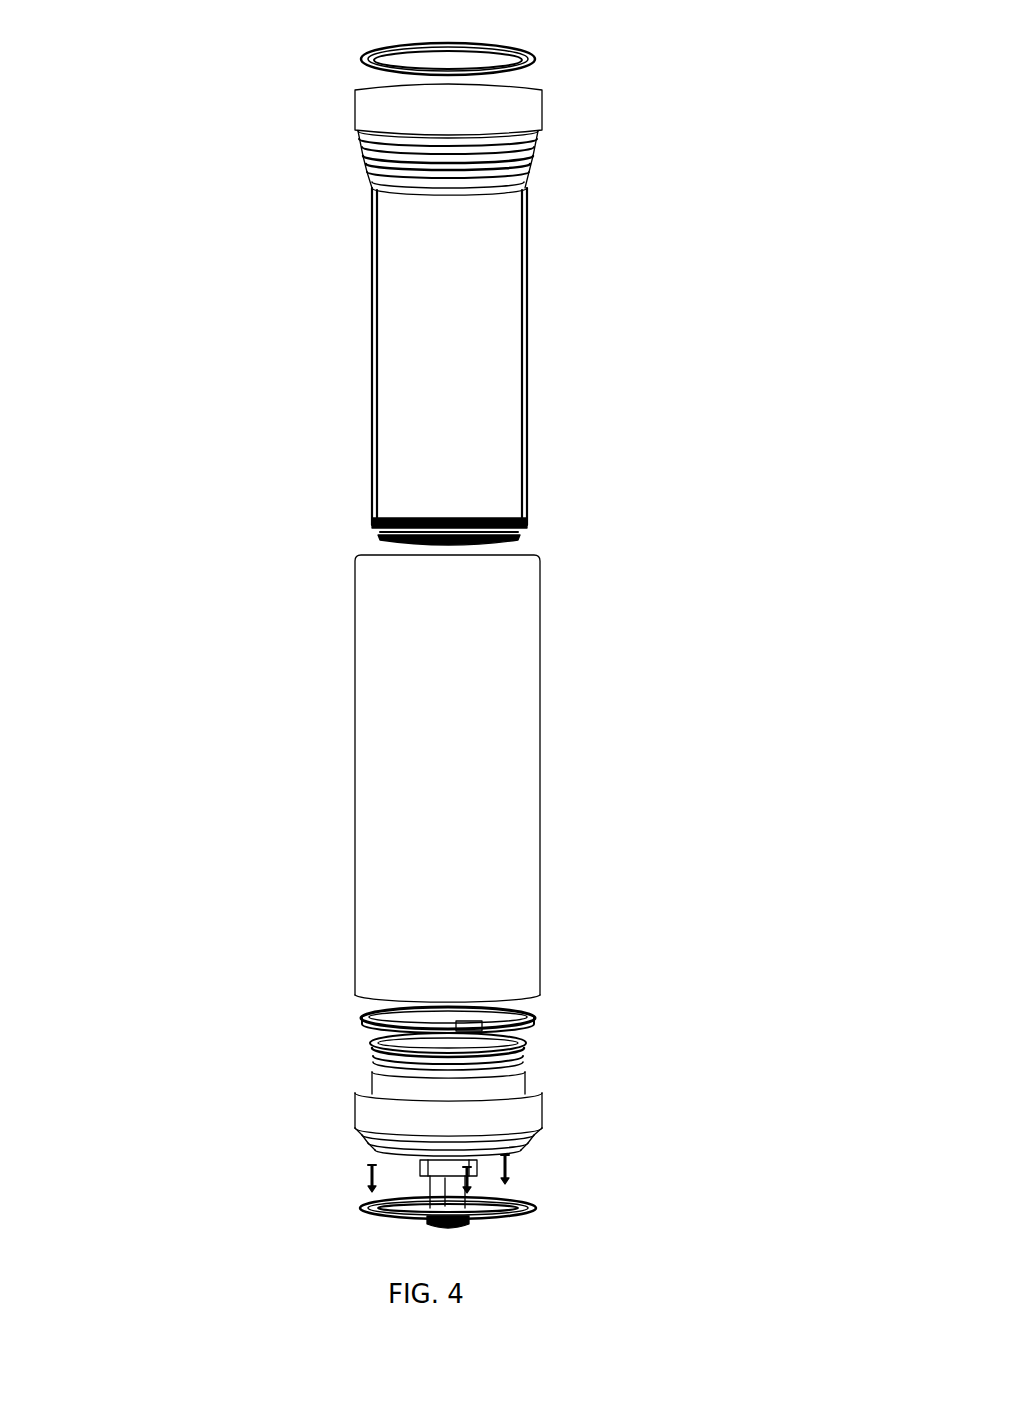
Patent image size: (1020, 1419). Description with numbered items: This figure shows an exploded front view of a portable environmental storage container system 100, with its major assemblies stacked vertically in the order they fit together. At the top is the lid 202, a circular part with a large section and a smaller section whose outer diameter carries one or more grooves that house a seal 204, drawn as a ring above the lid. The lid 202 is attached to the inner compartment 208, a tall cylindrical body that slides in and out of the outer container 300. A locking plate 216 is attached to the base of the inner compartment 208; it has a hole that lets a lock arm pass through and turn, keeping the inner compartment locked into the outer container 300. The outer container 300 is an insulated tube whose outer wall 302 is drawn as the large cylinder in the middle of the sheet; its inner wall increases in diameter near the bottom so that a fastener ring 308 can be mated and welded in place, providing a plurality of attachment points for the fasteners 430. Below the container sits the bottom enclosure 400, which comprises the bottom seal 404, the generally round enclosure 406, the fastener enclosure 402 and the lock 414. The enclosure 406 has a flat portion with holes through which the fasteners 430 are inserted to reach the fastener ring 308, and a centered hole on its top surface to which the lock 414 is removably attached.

The portable environmental storage container system 100 is at (298, 170).
The seal 204 is at (372, 57).
The lid 202 is at (500, 113).
The inner compartment 208 is at (495, 277).
The locking plate 216 is at (520, 533).
The outer container 300 is at (543, 721).
The outer wall 302 is at (510, 857).
The fastener ring 308 is at (365, 1023).
The bottom seal 404 is at (517, 1044).
The bottom enclosure 400 is at (325, 1101).
The enclosure 406 is at (522, 1119).
The fasteners 430 is at (370, 1168).
The lock 414 is at (452, 1195).
The fastener enclosure 402 is at (360, 1208).